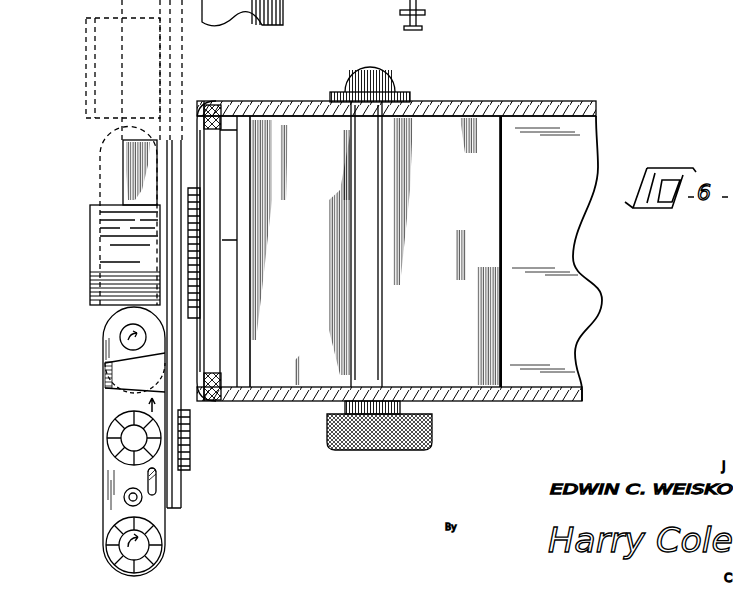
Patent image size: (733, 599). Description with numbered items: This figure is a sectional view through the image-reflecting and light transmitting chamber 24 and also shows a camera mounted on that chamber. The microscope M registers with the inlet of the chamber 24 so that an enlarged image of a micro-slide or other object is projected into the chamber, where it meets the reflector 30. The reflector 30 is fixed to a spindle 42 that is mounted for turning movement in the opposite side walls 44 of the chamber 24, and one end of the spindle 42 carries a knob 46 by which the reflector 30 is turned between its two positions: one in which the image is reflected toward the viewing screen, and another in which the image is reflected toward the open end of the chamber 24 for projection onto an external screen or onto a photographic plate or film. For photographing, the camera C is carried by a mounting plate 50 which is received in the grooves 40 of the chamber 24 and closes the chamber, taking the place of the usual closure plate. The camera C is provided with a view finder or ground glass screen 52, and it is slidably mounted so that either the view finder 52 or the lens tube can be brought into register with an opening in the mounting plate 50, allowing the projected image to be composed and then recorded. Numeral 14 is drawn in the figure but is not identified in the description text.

The view finder 52 is at (97, 62).
The grooves 40 is at (218, 104).
The mounting plate 50 is at (207, 175).
The image-reflecting and light transmitting chamber 24 is at (477, 91).
The side walls 44 is at (545, 100).
The reflector 30 is at (490, 213).
The spindle 42 is at (372, 312).
The knob 46 is at (373, 450).
The bottom plate 14 is at (543, 403).
The camera C is at (94, 428).
The microscope M is at (300, 0).